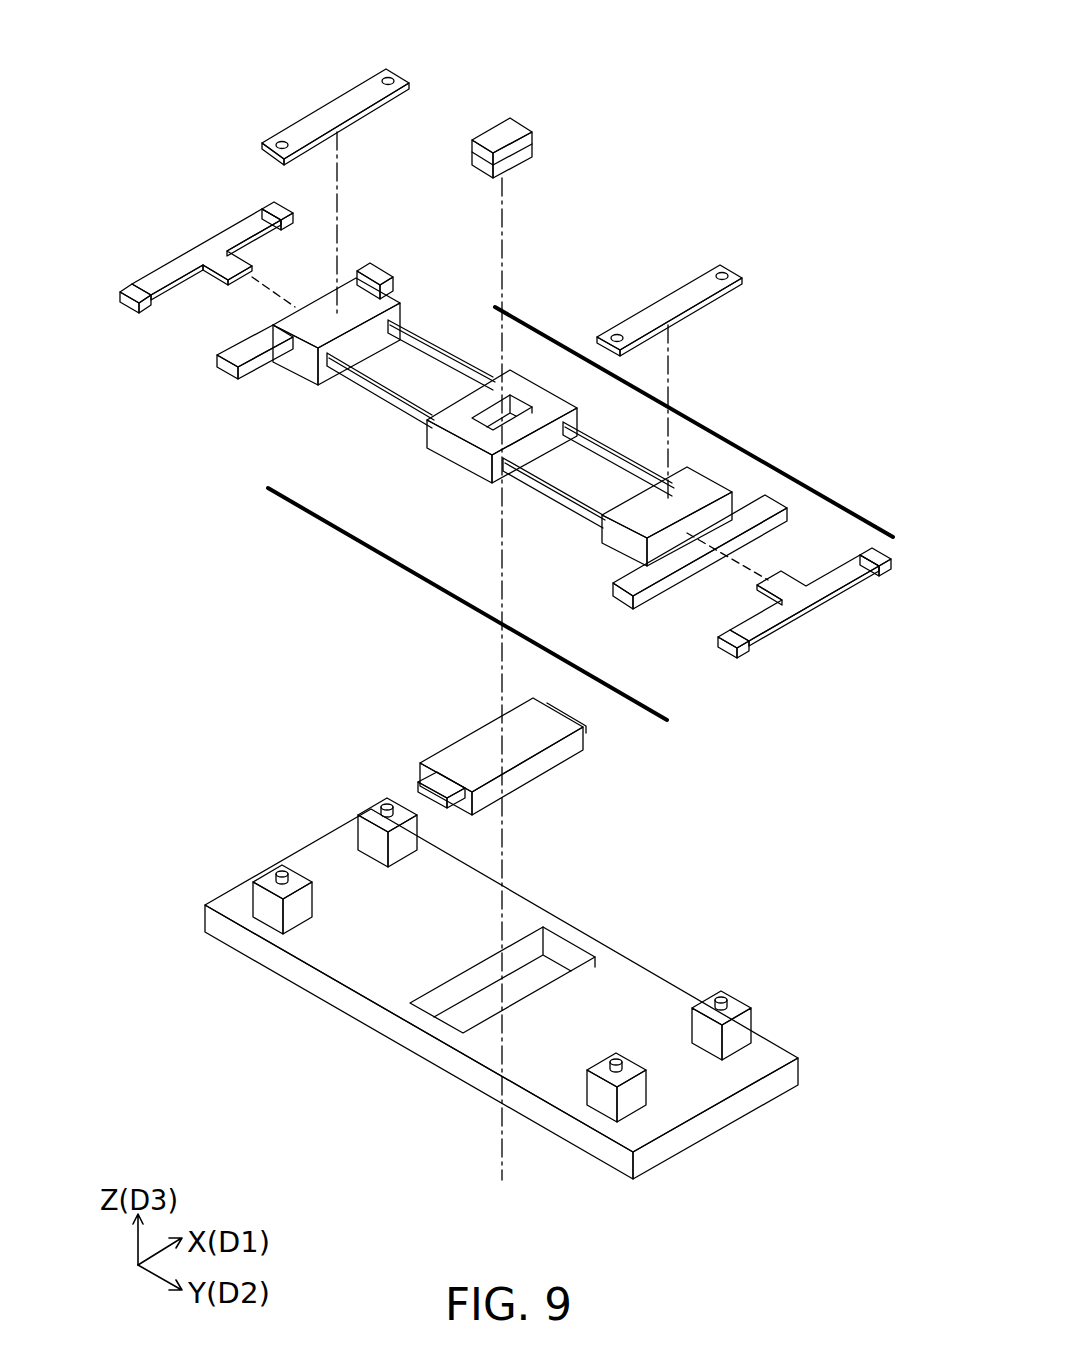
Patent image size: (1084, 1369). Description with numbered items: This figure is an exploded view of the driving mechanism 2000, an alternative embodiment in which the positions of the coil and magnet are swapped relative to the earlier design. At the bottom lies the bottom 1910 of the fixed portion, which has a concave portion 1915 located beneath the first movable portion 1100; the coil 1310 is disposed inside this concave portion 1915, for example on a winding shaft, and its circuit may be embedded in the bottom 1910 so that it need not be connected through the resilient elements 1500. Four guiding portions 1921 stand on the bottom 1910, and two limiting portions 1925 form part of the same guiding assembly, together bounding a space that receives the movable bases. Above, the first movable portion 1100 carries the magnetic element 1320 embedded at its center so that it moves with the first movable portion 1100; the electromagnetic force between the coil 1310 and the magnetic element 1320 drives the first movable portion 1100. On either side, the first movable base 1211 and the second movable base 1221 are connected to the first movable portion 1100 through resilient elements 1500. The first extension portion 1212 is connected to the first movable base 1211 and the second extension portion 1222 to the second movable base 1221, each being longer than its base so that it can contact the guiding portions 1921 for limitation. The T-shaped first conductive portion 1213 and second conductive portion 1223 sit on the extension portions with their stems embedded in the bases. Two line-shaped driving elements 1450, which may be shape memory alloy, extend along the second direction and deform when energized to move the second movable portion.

The driving mechanism 2000 is at (160, 45).
The limiting portion 1925 is at (337, 107).
The magnetic element 1320 is at (513, 128).
The second conductive portion 1223 is at (208, 253).
The second extension portion 1222 is at (238, 352).
The second movable base 1221 is at (297, 360).
The resilient element 1500 is at (428, 352).
The first movable portion 1100 is at (457, 453).
The driving element 1450 is at (693, 417).
The first movable base 1211 is at (695, 483).
The first extension portion 1212 is at (770, 500).
The first conductive portion 1213 is at (830, 585).
The coil 1310 is at (532, 770).
The bottom 1910 is at (501, 994).
The concave portion 1915 is at (430, 1003).
The guiding portion 1921 is at (377, 843).